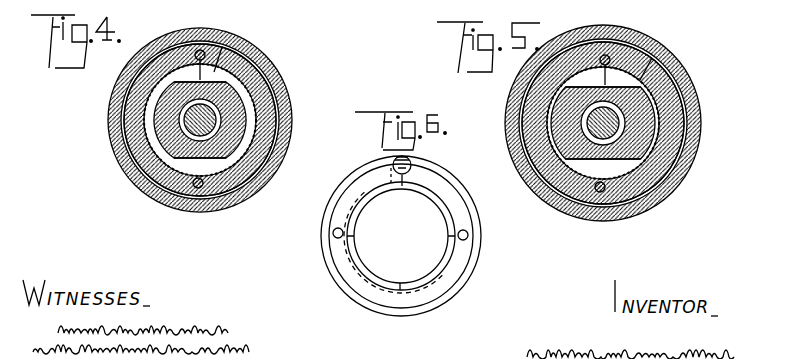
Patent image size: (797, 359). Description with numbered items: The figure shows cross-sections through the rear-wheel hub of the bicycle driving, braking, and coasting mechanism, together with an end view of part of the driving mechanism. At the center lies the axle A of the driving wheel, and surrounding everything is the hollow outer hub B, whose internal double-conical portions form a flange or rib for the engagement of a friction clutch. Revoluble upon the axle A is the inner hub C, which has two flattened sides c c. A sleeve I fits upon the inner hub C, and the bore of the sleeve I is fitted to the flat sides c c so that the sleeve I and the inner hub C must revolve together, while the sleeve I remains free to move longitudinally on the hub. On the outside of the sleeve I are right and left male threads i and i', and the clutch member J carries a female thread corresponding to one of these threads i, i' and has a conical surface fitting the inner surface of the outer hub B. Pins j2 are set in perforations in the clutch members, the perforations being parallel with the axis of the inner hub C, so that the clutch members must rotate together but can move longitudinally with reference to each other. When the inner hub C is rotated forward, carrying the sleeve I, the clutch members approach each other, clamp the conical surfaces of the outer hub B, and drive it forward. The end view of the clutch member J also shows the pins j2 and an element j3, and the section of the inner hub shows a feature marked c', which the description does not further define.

In FIG. 4, the axle A is at (203, 120).
In FIG. 5, the axle A is at (610, 128).
In FIG. 4, the outer hub B is at (112, 103).
In FIG. 5, the outer hub B is at (678, 172).
In FIG. 4, the inner hub C is at (150, 150).
In FIG. 4, the clutch member J is at (260, 90).
In FIG. 5, the clutch member J is at (528, 123).
In FIG. 6, the clutch member J is at (455, 272).
In FIG. 4, the sleeve I is at (210, 167).
In FIG. 5, the sleeve I is at (625, 167).
In FIG. 4, the male thread i is at (229, 128).
In FIG. 5, the male thread i' is at (638, 123).
In FIG. 4, the flattened side c is at (200, 121).
In FIG. 5, the flattened side c is at (603, 131).
In FIG. 5, the slot c' is at (635, 120).
In FIG. 4, the pin j2 is at (209, 228).
In FIG. 5, the pin j2 is at (602, 232).
In FIG. 6, the pin j2 is at (497, 233).
In FIG. 6, the screw j3 is at (411, 161).